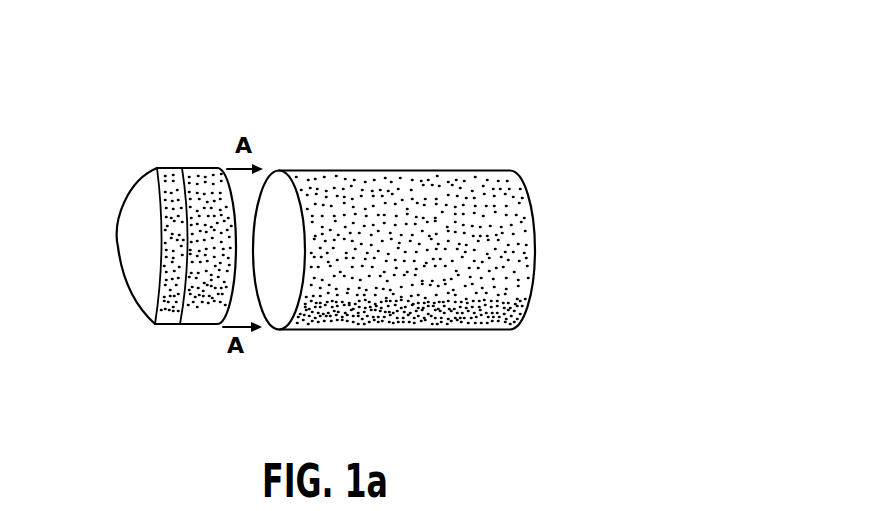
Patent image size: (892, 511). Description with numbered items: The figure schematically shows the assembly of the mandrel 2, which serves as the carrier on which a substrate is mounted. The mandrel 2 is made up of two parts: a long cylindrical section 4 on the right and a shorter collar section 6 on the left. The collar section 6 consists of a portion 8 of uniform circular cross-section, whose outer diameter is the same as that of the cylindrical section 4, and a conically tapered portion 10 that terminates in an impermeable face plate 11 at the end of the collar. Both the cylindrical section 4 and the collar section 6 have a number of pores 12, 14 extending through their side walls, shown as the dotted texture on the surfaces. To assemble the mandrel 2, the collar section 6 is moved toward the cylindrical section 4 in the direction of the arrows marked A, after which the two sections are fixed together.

The mandrel 2 is at (271, 145).
The cylindrical section 4 is at (428, 331).
The collar section 6 is at (172, 326).
The portion of uniform circular cross-section 8 is at (187, 328).
The conically tapered portion 10 is at (150, 321).
The impermeable face plate 11 is at (137, 247).
The pores 12 is at (402, 182).
The pores 14 is at (193, 176).